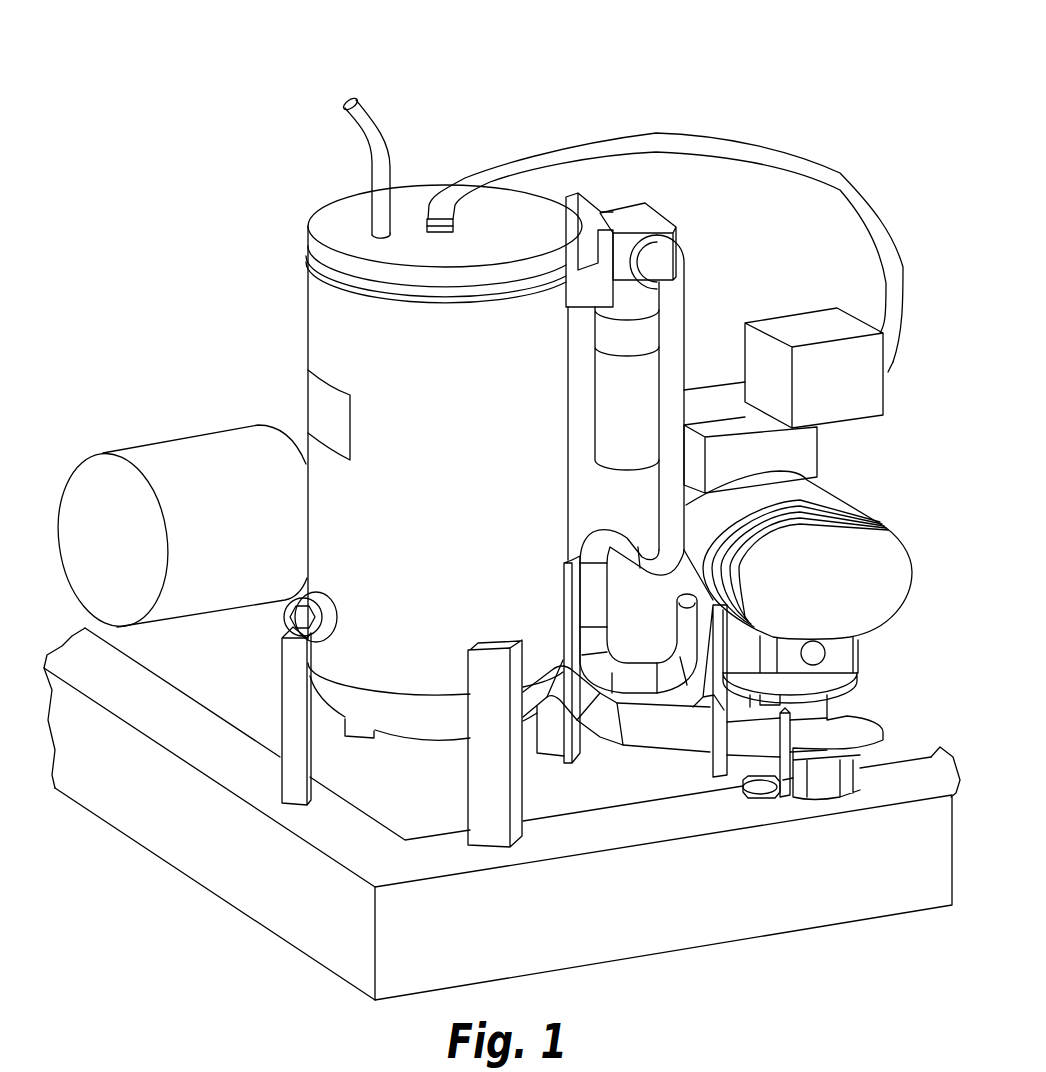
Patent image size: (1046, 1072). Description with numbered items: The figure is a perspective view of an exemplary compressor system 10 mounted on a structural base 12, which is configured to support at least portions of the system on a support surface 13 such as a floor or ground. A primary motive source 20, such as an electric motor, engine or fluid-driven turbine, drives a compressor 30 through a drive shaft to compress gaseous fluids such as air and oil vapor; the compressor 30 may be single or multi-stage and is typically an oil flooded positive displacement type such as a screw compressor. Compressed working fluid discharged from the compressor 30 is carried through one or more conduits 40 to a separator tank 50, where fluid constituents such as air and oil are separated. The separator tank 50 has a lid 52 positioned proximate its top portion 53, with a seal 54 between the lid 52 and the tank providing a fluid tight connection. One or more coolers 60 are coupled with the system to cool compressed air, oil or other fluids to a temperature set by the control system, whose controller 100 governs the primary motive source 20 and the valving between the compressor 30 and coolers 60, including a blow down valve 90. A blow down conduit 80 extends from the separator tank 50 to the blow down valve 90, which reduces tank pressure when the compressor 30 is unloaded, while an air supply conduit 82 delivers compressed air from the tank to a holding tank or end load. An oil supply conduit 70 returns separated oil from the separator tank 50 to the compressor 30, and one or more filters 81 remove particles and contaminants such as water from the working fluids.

The compressor system 10 is at (686, 72).
The structural base 12 is at (618, 912).
The support surface 13 is at (786, 1009).
The primary motive source 20 is at (816, 447).
The compressor 30 is at (843, 592).
The conduits 40 is at (666, 740).
The separator tank 50 is at (450, 503).
The lid 52 is at (345, 222).
The top portion 53 is at (395, 214).
The seal 54 is at (323, 277).
The coolers 60 is at (237, 538).
The oil supply conduit 70 is at (686, 303).
The blow down conduit 80 is at (749, 136).
The filters 81 is at (644, 411).
The air supply conduit 82 is at (378, 118).
The blow down valve 90 is at (906, 350).
The controller 100 is at (822, 396).